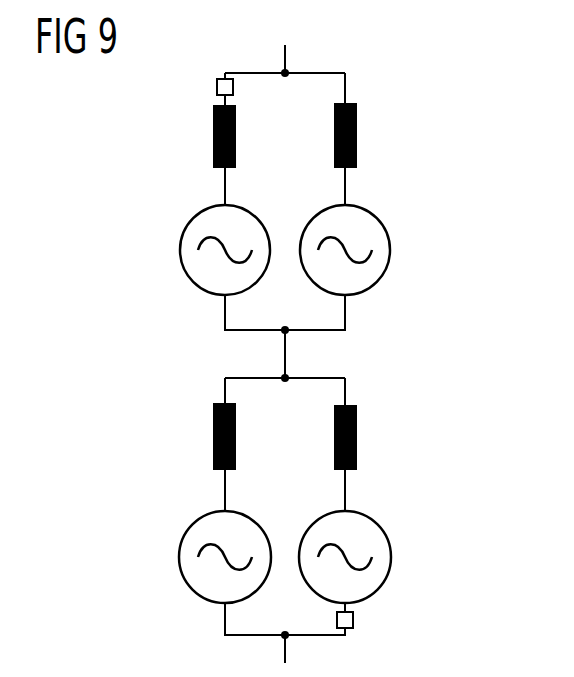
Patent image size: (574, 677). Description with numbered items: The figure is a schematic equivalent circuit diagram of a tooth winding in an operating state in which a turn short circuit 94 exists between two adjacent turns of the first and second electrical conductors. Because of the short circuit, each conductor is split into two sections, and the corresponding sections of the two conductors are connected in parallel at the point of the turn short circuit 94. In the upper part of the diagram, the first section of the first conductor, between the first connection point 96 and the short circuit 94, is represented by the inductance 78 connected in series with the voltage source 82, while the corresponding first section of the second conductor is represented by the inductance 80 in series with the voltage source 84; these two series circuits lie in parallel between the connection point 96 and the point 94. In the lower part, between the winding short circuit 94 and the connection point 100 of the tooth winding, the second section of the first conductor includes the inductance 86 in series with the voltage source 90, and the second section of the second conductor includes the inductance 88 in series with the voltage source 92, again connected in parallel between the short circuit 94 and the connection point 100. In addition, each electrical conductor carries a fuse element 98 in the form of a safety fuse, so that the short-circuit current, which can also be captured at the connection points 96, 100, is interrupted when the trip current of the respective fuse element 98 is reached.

The inductance L'a 78 is at (213, 135).
The inductance L'b 80 is at (357, 135).
The voltage source u'emk,a 82 is at (191, 217).
The voltage source u'emk,b 84 is at (378, 217).
The inductance L''a 86 is at (213, 436).
The inductance L''b 88 is at (357, 438).
The voltage source u''emk,a 90 is at (193, 525).
The voltage source u''emk,b 92 is at (378, 525).
The turn short circuit 94 is at (339, 358).
The first connection point 96 is at (285, 46).
The fuse element 98 is at (217, 87).
The connection point 100 is at (285, 655).